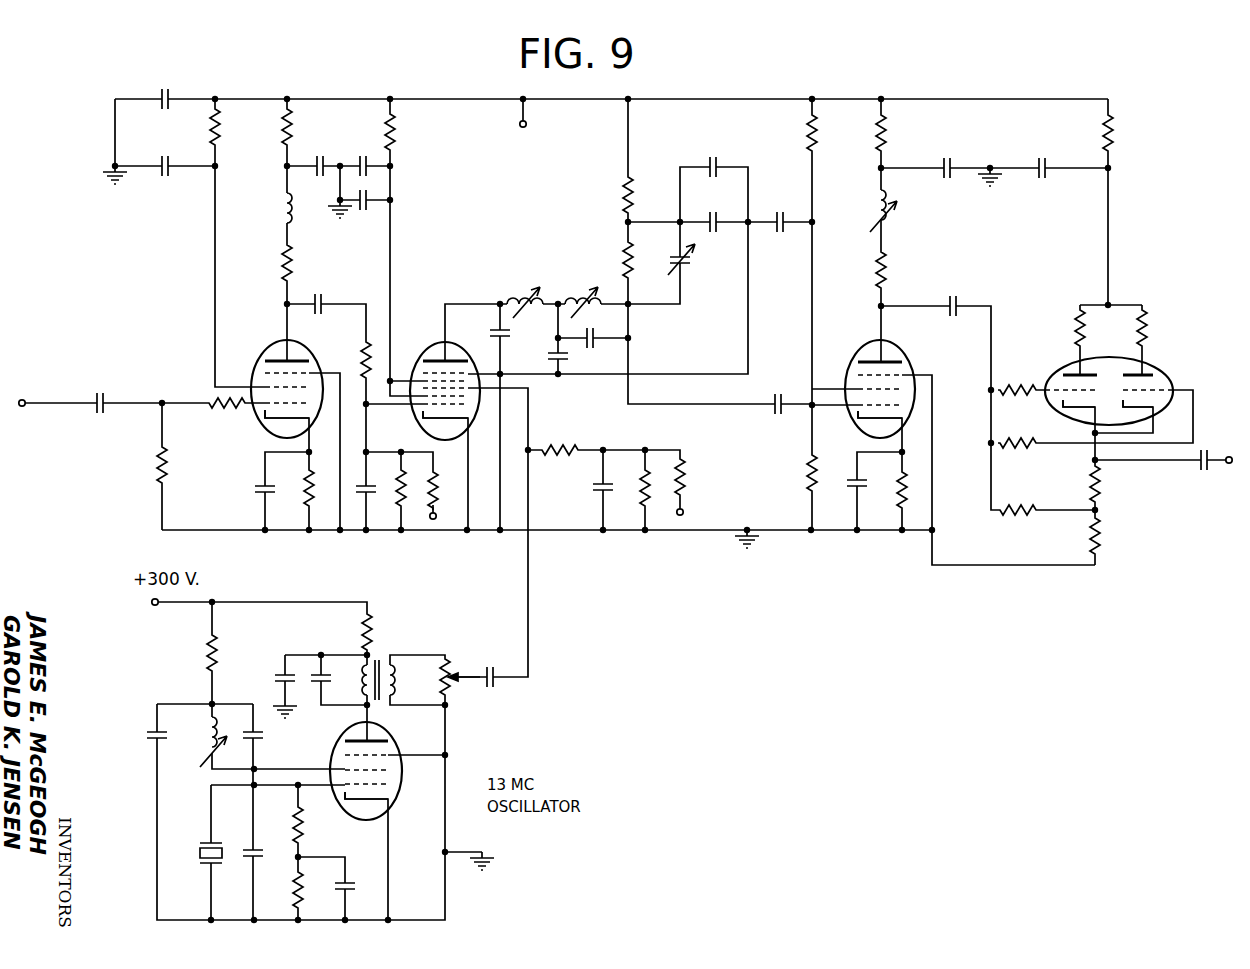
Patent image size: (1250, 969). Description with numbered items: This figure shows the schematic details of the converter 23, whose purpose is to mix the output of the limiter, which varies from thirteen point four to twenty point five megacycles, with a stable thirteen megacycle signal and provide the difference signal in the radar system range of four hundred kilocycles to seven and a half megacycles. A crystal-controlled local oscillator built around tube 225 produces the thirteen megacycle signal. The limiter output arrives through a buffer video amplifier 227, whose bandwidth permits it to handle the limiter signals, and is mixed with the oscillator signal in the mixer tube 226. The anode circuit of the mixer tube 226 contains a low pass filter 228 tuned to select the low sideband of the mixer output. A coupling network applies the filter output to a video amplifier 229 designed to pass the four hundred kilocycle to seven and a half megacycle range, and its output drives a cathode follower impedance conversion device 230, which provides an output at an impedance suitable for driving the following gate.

The converter 23 is at (737, 626).
The tube 225 is at (391, 810).
The mixer tube 226 is at (426, 433).
The buffer video amplifier 227 is at (266, 432).
The low pass filter 228 is at (546, 354).
The video amplifier 229 is at (856, 432).
The cathode follower impedance conversion device 230 is at (1062, 418).